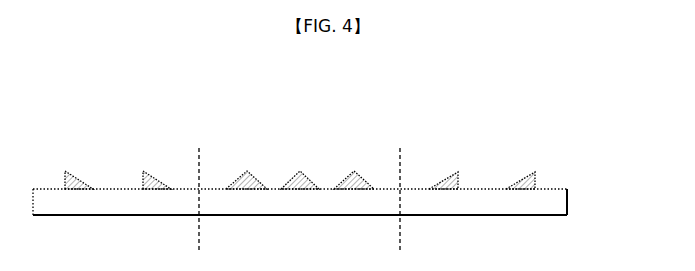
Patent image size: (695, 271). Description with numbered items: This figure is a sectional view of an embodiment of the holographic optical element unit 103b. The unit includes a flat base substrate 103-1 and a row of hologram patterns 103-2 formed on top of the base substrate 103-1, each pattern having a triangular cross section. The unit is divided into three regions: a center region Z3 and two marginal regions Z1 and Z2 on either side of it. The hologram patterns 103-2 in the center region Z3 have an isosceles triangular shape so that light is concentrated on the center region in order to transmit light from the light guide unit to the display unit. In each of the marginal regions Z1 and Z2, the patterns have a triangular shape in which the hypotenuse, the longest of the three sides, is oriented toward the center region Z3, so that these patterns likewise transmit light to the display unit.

The holographic optical element unit 103b is at (65, 114).
The base substrate 103-1 is at (557, 203).
The hologram patterns 103-2 is at (527, 172).
The marginal region Z1 is at (118, 211).
The marginal region Z2 is at (487, 189).
The center region Z3 is at (300, 210).